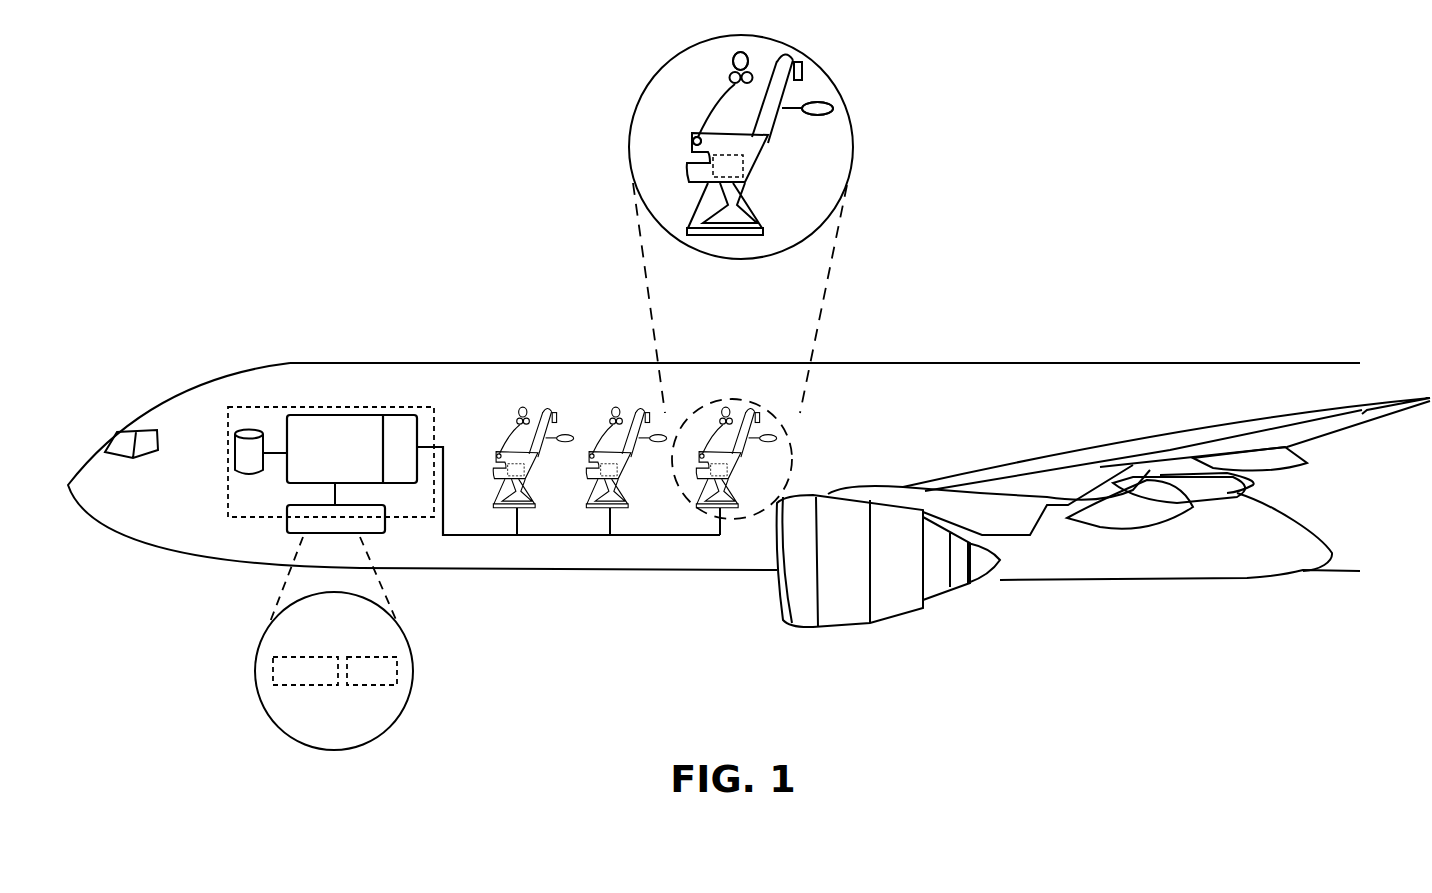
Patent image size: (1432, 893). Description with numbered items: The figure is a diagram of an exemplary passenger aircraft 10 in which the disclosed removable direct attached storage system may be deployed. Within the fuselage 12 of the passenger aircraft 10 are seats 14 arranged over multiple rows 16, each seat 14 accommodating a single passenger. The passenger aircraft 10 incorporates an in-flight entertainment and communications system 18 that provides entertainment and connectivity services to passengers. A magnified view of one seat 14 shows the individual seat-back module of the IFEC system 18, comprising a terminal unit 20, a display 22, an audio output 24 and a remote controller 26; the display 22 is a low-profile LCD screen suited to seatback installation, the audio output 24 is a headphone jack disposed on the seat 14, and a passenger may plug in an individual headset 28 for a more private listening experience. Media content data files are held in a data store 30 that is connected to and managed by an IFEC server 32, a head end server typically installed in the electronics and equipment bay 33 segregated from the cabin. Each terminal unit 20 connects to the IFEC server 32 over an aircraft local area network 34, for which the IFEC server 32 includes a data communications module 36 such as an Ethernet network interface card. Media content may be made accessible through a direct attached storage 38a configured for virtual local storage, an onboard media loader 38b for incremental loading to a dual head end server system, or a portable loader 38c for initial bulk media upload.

The passenger aircraft 10 is at (1043, 363).
The fuselage 12 is at (836, 435).
The seat 14 is at (640, 413).
The rows 16 is at (492, 588).
The in-flight entertainment and communications (IFEC) system 18 is at (260, 348).
The terminal unit 20 is at (700, 193).
The display 22 is at (803, 76).
The audio output 24 is at (692, 141).
The remote controller 26 is at (810, 116).
The headset 28 is at (730, 78).
The data store 30 is at (249, 430).
The IFEC server 32 is at (335, 415).
The electronics and equipment (EE) bay 33 is at (436, 420).
The aircraft local area network 34 is at (590, 538).
The data communications module 36 is at (398, 415).
The direct attached storage (DAS) 38a is at (297, 504).
The onboard media loader (OML) 38b is at (305, 686).
The portable loader 38c is at (372, 686).